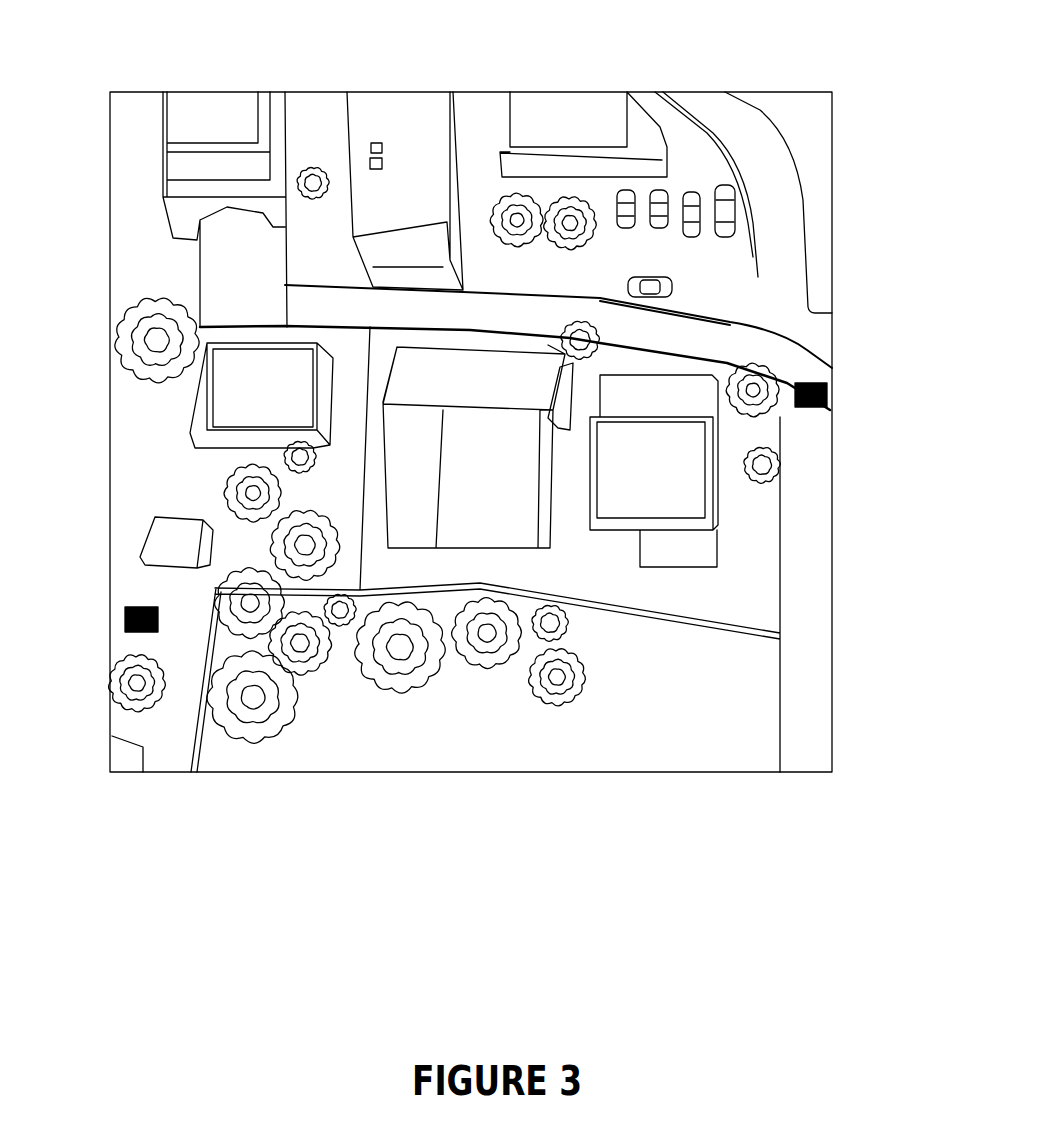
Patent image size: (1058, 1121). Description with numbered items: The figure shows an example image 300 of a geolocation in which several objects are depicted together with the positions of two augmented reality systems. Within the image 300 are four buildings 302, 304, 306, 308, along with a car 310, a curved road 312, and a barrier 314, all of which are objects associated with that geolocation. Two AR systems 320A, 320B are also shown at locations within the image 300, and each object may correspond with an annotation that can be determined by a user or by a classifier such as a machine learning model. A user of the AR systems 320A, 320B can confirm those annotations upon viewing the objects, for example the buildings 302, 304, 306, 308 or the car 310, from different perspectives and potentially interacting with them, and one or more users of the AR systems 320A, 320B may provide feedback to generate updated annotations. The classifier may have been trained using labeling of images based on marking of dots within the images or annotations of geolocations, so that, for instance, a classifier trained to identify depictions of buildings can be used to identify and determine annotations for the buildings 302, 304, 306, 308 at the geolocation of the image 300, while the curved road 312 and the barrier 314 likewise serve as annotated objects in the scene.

The image 300 is at (858, 76).
The building 302 is at (190, 433).
The building 304 is at (485, 507).
The building 306 is at (660, 453).
The building 308 is at (407, 120).
The car 310 is at (752, 202).
The curved road 312 is at (792, 240).
The barrier 314 is at (832, 367).
The AR system 320A is at (827, 395).
The AR system 320B is at (125, 618).